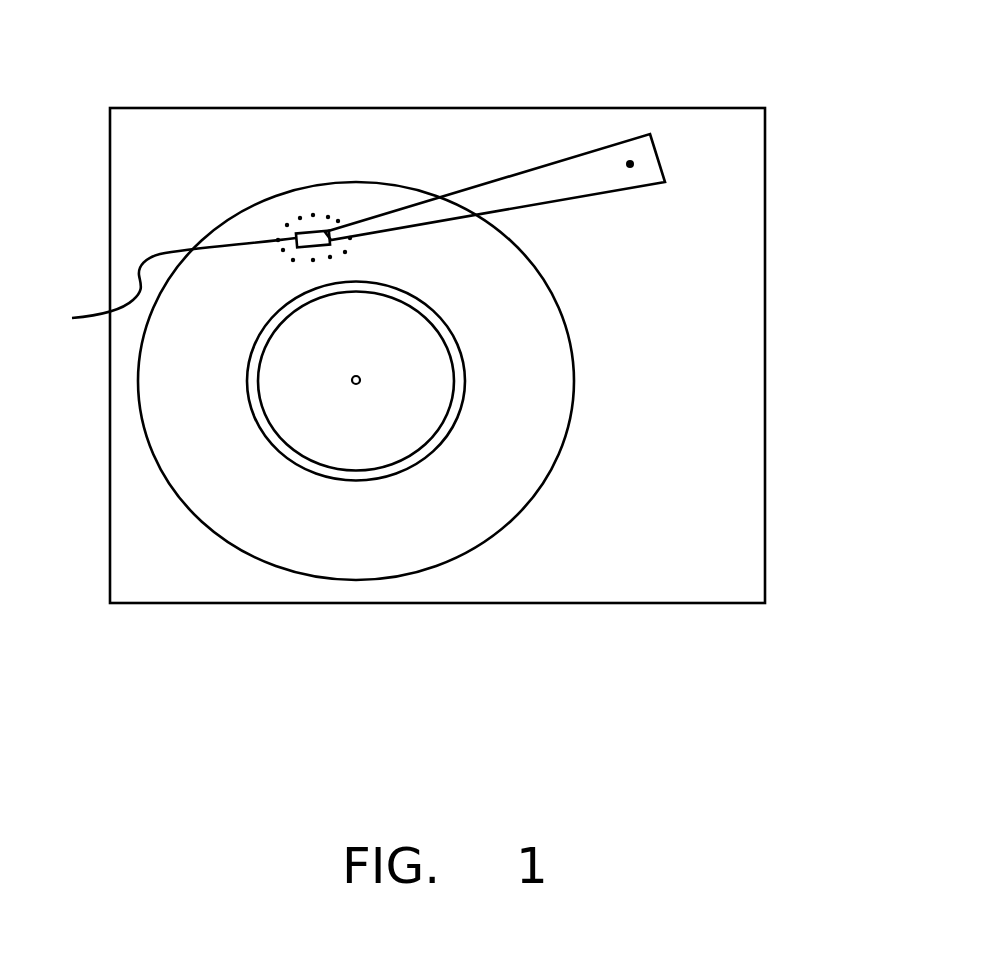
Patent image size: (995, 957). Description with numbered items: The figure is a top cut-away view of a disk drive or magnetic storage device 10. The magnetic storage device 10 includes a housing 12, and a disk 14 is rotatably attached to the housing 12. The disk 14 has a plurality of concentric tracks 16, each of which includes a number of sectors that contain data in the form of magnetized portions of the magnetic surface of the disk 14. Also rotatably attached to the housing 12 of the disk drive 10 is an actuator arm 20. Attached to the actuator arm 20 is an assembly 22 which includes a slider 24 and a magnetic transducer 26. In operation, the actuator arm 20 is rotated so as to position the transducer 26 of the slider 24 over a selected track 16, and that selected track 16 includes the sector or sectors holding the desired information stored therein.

The magnetic storage device 10 is at (786, 154).
The housing 12 is at (765, 258).
The disk 14 is at (525, 405).
The concentric tracks 16 is at (313, 462).
The actuator arm 20 is at (585, 177).
The assembly 22 is at (313, 216).
The slider 24 is at (166, 285).
The magnetic transducer 26 is at (327, 230).